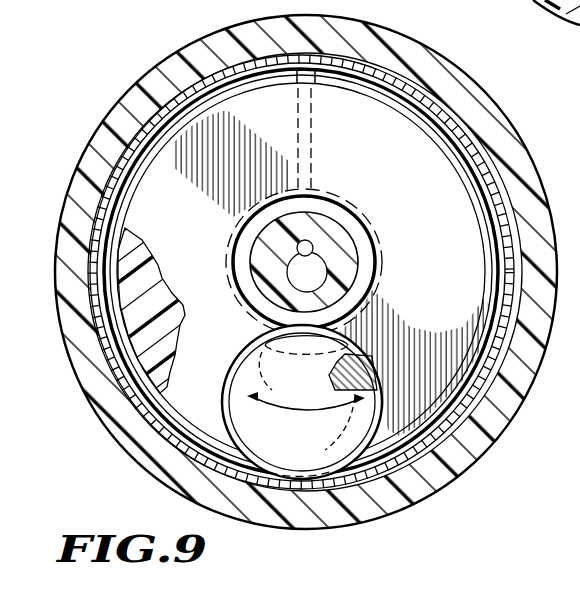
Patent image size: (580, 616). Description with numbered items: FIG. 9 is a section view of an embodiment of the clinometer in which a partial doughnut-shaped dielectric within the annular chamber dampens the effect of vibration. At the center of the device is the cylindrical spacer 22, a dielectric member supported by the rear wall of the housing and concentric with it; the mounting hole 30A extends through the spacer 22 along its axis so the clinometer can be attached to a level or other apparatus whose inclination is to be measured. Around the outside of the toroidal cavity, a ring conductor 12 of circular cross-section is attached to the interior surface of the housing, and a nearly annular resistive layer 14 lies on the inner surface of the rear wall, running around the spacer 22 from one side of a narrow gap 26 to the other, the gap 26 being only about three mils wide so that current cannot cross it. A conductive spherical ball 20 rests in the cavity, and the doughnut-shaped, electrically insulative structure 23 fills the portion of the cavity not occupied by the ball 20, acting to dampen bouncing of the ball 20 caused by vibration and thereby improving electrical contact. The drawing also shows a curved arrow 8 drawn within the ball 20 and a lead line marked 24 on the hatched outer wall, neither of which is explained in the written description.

The direction of rotation arrow 8 is at (272, 403).
The ring conductor 12 is at (470, 421).
The annular resistive layer 14 is at (219, 80).
The conductive spherical ball 20 is at (313, 456).
The cylindrical spacer 22 is at (348, 254).
The doughnut-shaped electrically insulative structure 23 is at (404, 173).
The casing wall 24 is at (137, 97).
The narrow gap 26 is at (319, 73).
The mounting hole 30A is at (303, 254).